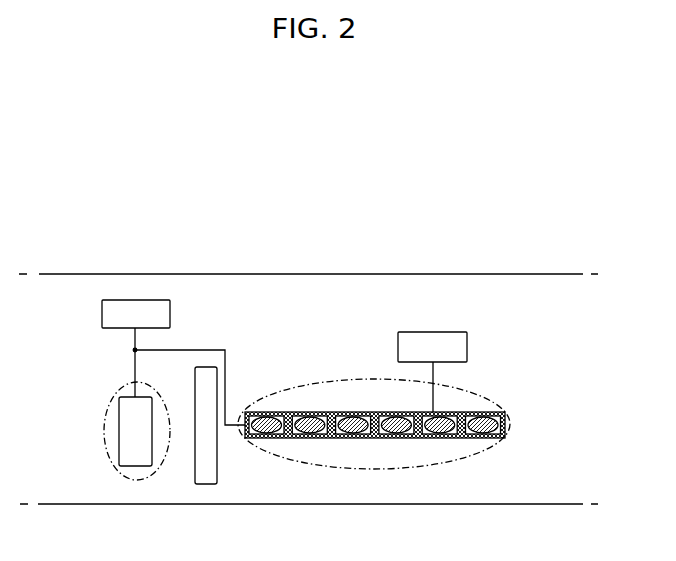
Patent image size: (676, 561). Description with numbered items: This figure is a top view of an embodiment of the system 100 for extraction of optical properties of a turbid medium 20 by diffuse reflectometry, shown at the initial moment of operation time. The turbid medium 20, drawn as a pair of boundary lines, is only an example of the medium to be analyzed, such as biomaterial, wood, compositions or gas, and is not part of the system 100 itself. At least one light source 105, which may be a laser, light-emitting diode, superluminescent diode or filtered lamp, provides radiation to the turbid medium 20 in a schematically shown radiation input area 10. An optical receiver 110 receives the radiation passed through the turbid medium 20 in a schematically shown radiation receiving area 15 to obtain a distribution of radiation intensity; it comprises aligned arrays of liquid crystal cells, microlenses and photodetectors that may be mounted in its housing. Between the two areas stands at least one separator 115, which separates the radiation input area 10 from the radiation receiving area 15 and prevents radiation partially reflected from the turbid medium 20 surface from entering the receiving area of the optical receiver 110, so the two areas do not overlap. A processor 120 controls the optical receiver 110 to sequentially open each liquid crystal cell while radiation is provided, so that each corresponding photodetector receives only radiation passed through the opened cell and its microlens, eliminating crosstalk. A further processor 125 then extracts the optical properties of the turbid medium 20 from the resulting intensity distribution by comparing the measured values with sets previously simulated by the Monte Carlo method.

The system for extraction of optical properties of a turbid medium 100 is at (514, 334).
The radiation input area 10 is at (113, 467).
The light source 105 is at (118, 437).
The optical receiver 110 is at (508, 425).
The separator 115 is at (218, 370).
The processor 120 is at (151, 300).
The processor 125 is at (445, 332).
The radiation receiving area 15 is at (310, 465).
The turbid medium 20 is at (500, 505).